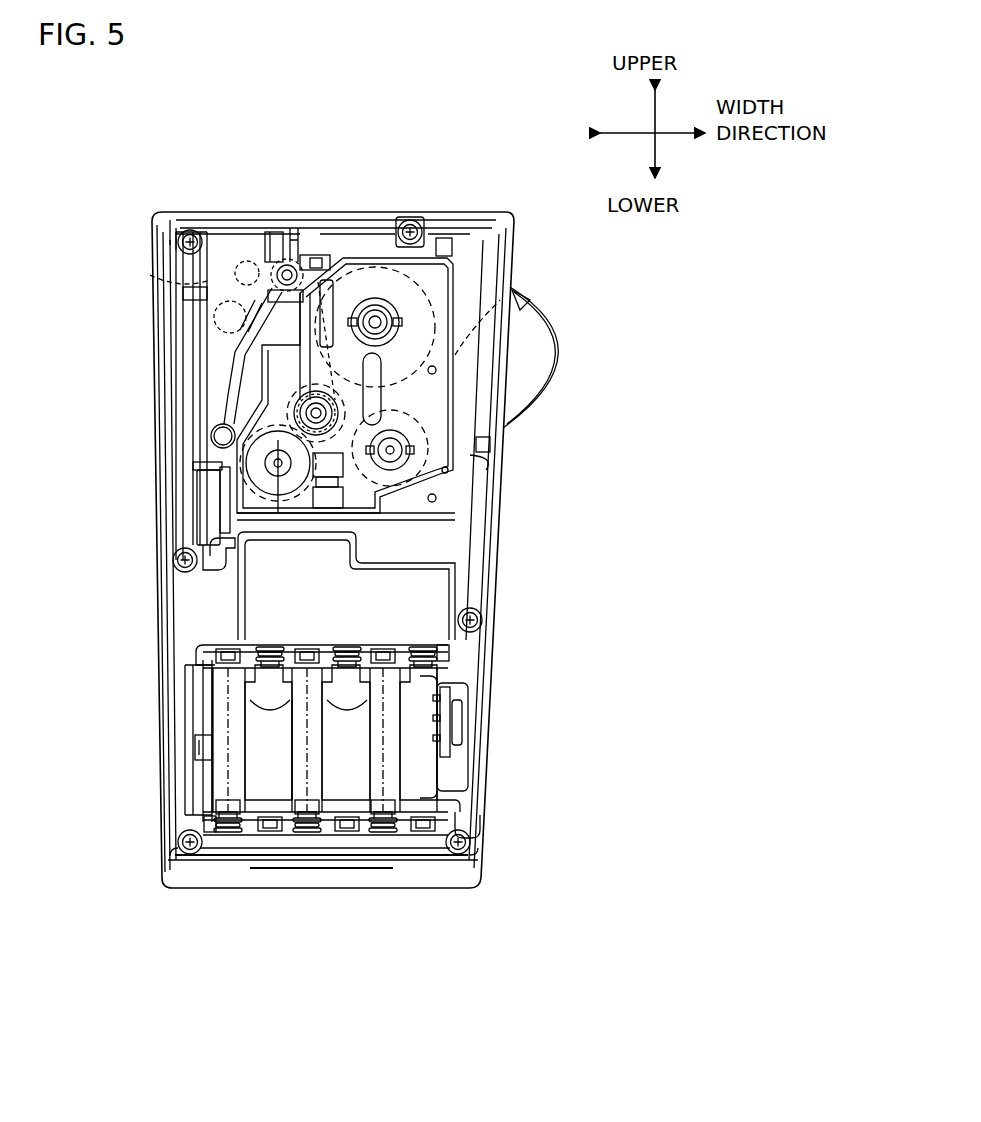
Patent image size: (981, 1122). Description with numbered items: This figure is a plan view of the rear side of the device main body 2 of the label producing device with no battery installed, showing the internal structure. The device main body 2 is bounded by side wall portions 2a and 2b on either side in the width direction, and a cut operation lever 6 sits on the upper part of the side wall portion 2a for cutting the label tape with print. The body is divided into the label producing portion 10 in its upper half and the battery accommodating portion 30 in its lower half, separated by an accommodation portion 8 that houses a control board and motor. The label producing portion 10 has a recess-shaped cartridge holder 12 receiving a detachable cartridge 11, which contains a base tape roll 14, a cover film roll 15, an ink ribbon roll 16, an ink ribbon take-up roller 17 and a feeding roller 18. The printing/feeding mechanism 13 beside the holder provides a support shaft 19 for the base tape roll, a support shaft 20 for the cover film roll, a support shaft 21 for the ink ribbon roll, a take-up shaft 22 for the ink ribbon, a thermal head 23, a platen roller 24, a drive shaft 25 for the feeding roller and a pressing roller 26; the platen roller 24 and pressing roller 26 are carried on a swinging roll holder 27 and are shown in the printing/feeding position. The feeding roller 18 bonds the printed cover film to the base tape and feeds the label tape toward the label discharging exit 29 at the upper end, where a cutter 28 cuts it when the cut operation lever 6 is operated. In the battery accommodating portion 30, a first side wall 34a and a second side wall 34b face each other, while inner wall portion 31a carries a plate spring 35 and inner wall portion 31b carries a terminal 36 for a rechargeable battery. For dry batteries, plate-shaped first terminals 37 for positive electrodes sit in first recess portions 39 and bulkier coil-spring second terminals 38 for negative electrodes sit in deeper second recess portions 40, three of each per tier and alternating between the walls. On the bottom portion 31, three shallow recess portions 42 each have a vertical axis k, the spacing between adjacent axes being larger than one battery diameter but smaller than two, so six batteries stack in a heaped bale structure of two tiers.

The device main body 2 is at (130, 238).
The side wall portion 2a is at (456, 288).
The side wall portion 2b is at (158, 564).
The cut operation lever 6 is at (547, 330).
The accommodation portion 8 is at (264, 610).
The label producing portion 10 is at (158, 395).
The cartridge 11 is at (351, 258).
The cartridge holder 12 is at (446, 238).
The printing/feeding mechanism 13 is at (200, 355).
The base tape roll 14 is at (514, 243).
The cover film roll 15 is at (492, 462).
The ink ribbon roll 16 is at (195, 462).
The ink ribbon take-up roller 17 is at (456, 355).
The feeding roller 18 is at (283, 230).
The support shaft 19 is at (400, 322).
The support shaft 20 is at (403, 455).
The support shaft 21 is at (246, 469).
The take-up shaft 22 is at (340, 412).
The thermal head 23 is at (228, 352).
The platen roller 24 is at (214, 324).
The drive shaft 25 is at (304, 250).
The pressing roller 26 is at (245, 260).
The roll holder 27 is at (150, 270).
The cutter 28 is at (297, 240).
The label discharging exit 29 is at (268, 240).
The battery accommodating portion 30 is at (192, 707).
The bottom portion 31 is at (268, 795).
The inner wall portion 31a is at (210, 772).
The inner wall portion 31b is at (450, 790).
The first side wall 34a is at (440, 690).
The second side wall 34b is at (436, 793).
The plate spring 35 is at (204, 745).
The terminal 36 is at (452, 740).
The first terminal 37 is at (306, 650).
The second terminal 38 is at (420, 652).
The first recess portion 39 is at (205, 663).
The second recess portion 40 is at (450, 650).
The recess portion 42 is at (226, 786).
The vertical axis k is at (300, 711).